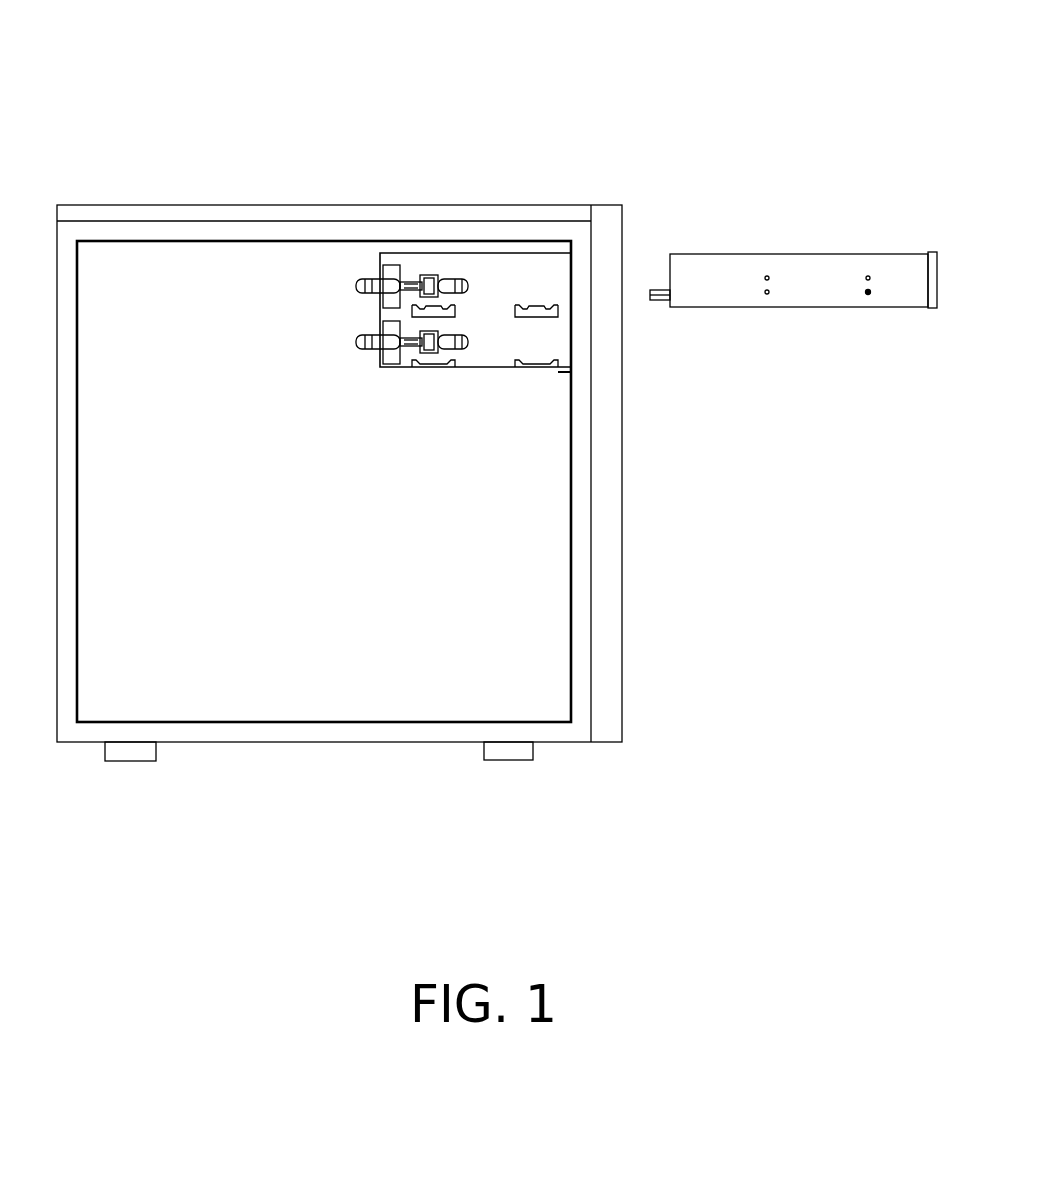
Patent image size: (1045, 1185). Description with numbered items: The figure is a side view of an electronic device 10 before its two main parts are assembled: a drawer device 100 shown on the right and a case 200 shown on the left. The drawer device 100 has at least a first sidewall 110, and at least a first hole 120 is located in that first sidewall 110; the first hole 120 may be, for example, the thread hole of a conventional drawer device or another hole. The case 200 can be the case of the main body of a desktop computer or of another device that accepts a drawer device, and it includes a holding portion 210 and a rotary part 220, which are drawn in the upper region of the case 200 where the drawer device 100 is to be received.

The electronic device 10 is at (705, 56).
The drawer device 100 is at (704, 254).
The first sidewall 110 is at (824, 285).
The first hole 120 is at (868, 294).
The case 200 is at (535, 204).
The holding portion 210 is at (455, 268).
The rotary part 220 is at (410, 268).